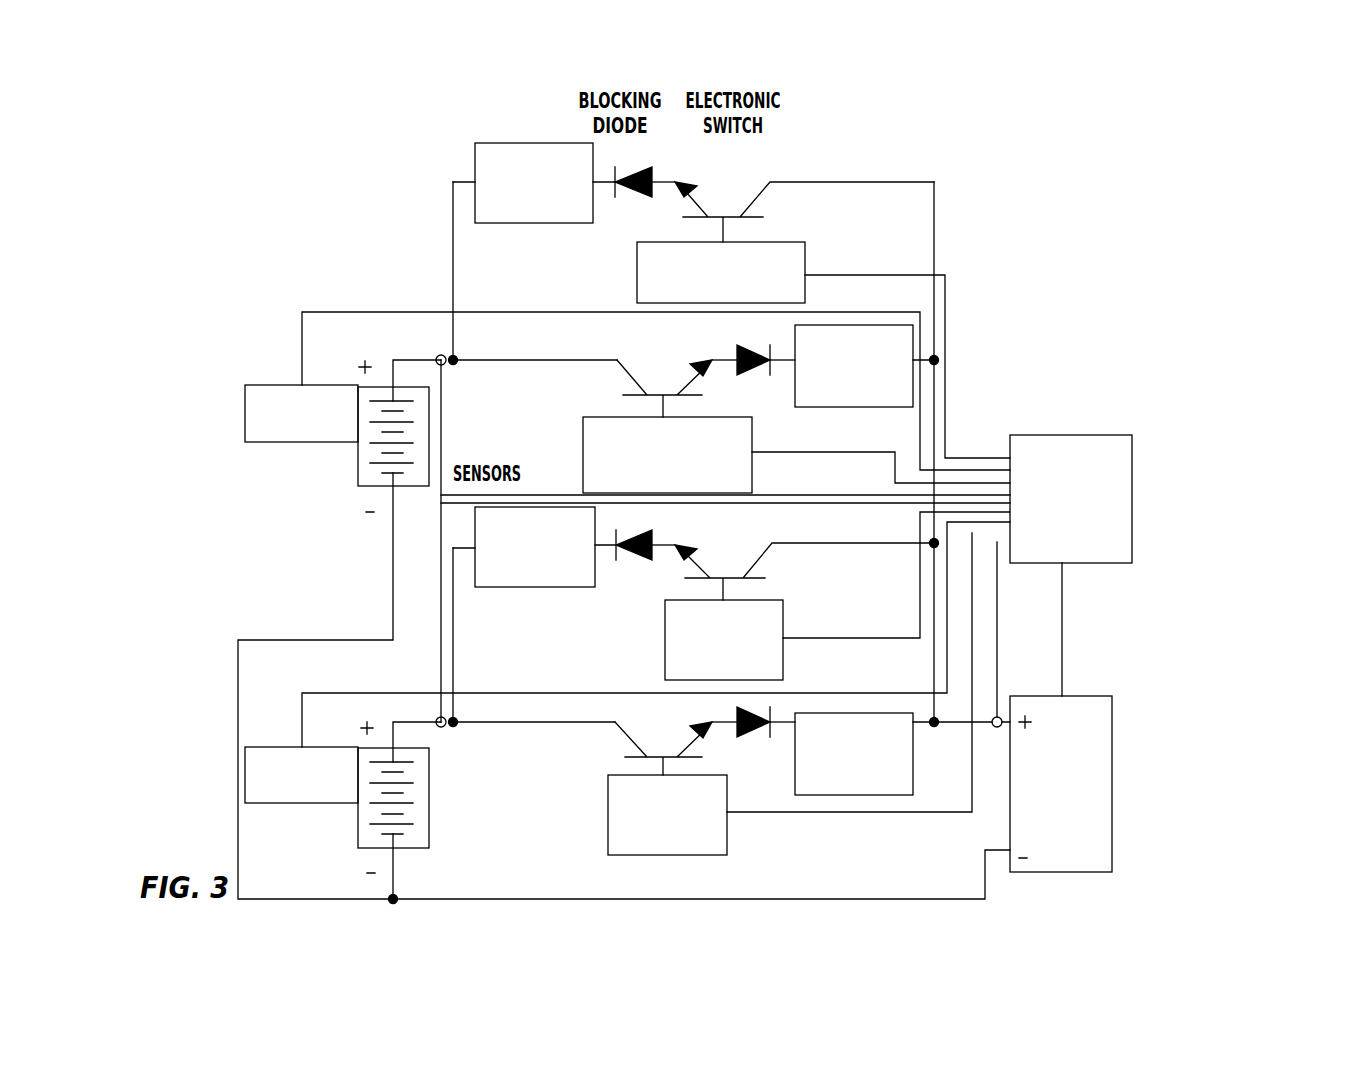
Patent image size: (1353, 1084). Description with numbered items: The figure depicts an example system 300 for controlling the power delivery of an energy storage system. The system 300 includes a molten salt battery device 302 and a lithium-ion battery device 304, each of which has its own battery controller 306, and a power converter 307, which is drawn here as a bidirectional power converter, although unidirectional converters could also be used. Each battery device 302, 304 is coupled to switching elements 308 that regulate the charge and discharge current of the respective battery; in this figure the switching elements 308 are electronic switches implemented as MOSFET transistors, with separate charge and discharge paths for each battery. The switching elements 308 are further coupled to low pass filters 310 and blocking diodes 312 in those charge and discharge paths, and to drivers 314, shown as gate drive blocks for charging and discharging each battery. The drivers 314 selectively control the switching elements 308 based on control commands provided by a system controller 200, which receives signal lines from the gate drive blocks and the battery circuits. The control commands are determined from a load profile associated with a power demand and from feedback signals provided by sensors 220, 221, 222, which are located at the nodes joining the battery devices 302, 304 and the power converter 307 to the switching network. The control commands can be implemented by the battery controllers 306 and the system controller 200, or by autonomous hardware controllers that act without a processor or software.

The system 300 is at (1002, 157).
The system controller 200 is at (1122, 435).
The molten salt battery device 302 is at (384, 487).
The lithium-ion battery device 304 is at (429, 832).
The battery controller 306 is at (265, 385).
The power converter 307 is at (1095, 872).
The switching element 308 is at (745, 212).
The low pass filter 310 is at (486, 143).
The blocking diode 312 is at (645, 197).
The driver 314 is at (637, 287).
The sensor 220 is at (444, 727).
The sensor 221 is at (437, 357).
The sensor 222 is at (996, 728).